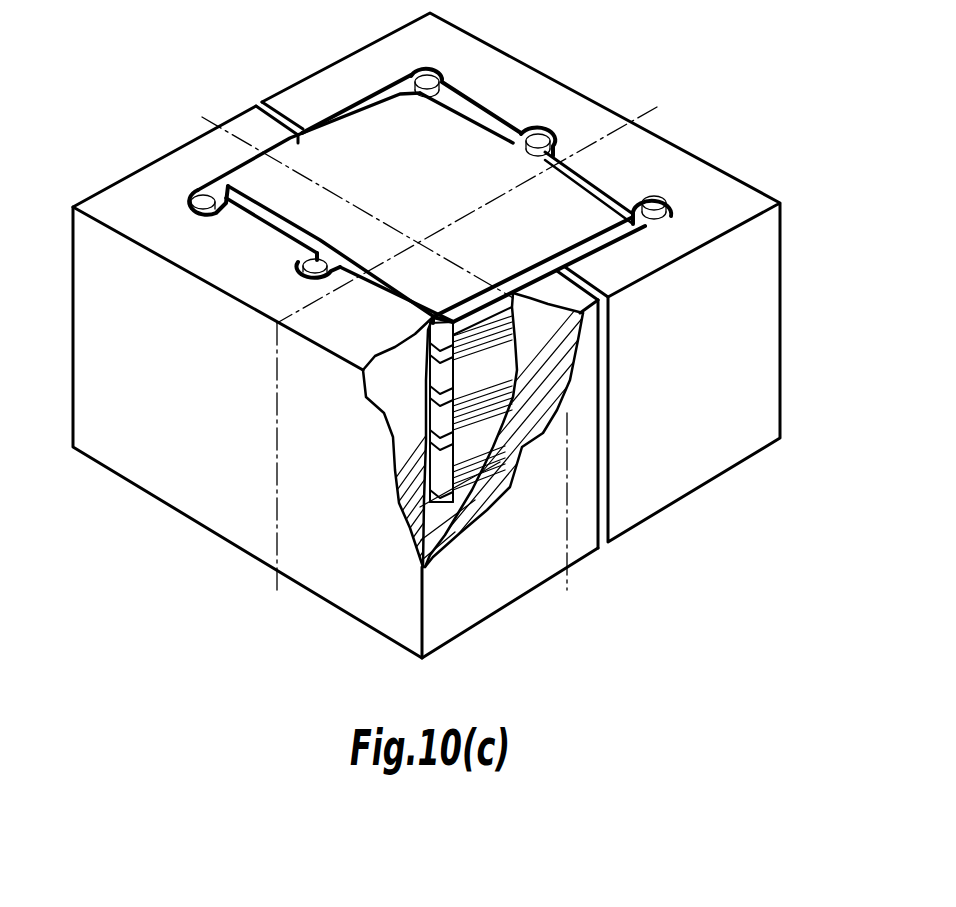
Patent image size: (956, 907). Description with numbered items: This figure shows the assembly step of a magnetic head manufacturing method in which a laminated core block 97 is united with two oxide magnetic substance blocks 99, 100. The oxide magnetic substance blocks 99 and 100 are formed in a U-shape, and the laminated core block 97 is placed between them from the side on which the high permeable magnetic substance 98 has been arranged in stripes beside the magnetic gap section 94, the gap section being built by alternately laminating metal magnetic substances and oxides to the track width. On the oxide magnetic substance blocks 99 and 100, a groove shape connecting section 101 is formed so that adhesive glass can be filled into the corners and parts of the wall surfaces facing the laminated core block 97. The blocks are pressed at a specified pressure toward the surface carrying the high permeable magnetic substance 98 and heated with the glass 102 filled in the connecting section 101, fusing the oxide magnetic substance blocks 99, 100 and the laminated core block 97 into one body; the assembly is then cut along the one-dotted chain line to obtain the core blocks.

The magnetic gap section 94 is at (483, 328).
The laminated core block 97 is at (361, 134).
The high permeable magnetic substance 98 is at (440, 371).
The oxide magnetic substance block 99 is at (110, 200).
The oxide magnetic substance block 100 is at (740, 173).
The groove shape connecting section 101 is at (443, 75).
The glass 102 is at (540, 133).